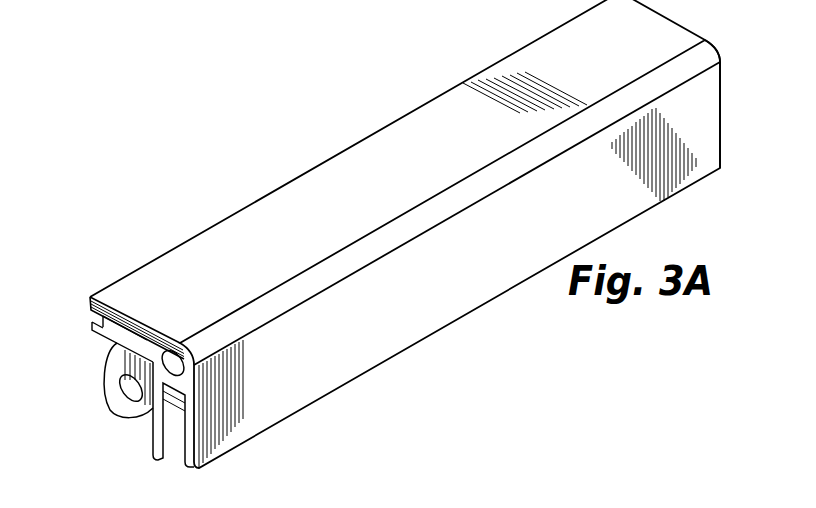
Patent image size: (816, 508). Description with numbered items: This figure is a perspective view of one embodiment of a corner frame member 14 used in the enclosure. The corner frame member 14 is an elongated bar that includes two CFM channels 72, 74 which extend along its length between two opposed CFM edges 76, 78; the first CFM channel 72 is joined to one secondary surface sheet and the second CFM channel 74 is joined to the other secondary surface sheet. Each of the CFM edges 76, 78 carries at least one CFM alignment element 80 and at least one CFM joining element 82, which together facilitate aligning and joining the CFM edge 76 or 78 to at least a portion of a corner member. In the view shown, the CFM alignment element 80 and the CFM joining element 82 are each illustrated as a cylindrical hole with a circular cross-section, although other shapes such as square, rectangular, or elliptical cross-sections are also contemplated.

The corner frame member 14 is at (327, 133).
The CFM channel 72 is at (93, 320).
The CFM channel 74 is at (172, 460).
The CFM edge 76 is at (197, 408).
The CFM edge 78 is at (721, 101).
The CFM alignment element 80 is at (180, 367).
The CFM joining element 82 is at (130, 388).